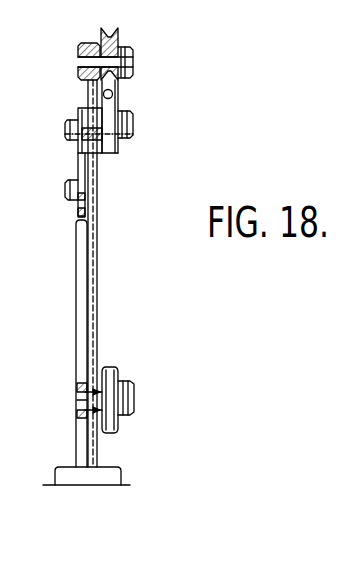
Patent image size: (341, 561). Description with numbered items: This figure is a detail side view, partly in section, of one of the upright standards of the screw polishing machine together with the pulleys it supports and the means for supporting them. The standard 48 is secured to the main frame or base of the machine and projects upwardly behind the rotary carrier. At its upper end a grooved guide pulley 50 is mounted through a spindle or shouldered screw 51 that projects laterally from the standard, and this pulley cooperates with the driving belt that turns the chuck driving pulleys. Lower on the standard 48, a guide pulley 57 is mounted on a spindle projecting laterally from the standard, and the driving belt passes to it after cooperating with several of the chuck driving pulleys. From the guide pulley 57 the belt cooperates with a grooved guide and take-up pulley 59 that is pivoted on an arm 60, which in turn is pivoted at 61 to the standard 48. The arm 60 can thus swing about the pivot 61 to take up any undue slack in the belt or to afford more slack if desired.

The standard 48 is at (93, 273).
The grooved guide pulley 50 is at (132, 21).
The spindle or shouldered screw 51 is at (80, 63).
The guide pulley 57 is at (109, 370).
The grooved guide and take-up pulley 59 is at (110, 157).
The arm 60 is at (82, 150).
The pivot 61 is at (68, 196).